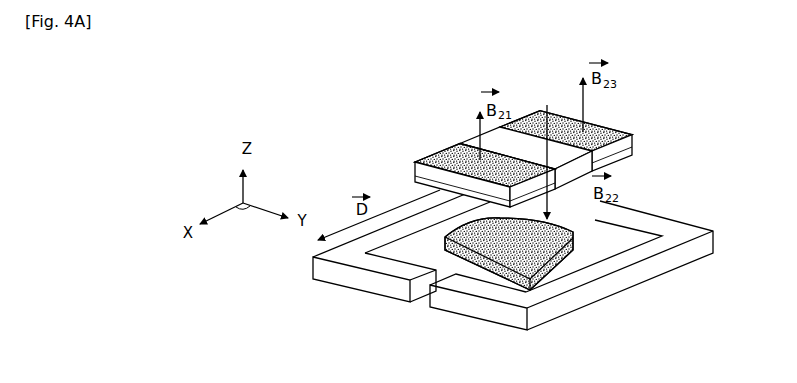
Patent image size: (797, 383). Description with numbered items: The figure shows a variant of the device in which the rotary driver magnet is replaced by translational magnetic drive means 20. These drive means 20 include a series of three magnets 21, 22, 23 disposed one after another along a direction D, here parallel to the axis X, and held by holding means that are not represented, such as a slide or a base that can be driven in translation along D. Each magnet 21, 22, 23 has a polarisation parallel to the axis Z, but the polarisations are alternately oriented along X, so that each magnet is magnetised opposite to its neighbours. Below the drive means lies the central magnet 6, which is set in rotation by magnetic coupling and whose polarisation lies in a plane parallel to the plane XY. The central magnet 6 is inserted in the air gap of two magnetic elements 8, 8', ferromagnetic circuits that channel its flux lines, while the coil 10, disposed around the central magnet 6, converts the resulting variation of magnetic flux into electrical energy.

The central magnet 6 is at (580, 282).
The magnetic element 8 is at (478, 322).
The magnetic element 8' is at (374, 296).
The coil 10 is at (676, 244).
The magnetic drive means 20 is at (548, 96).
The magnet 21 is at (427, 156).
The magnet 22 is at (598, 158).
The magnet 23 is at (633, 130).